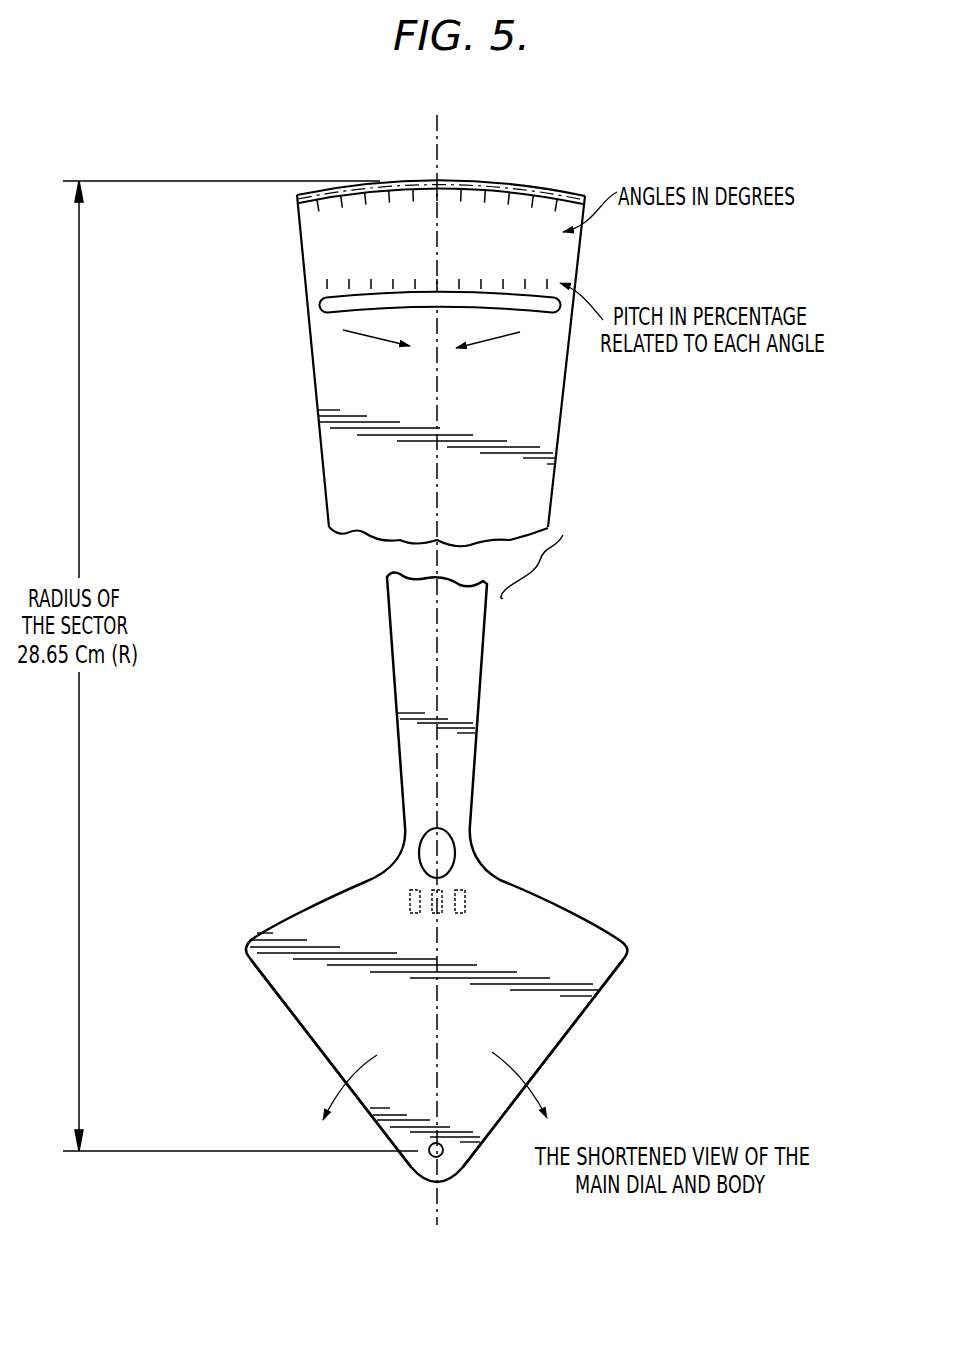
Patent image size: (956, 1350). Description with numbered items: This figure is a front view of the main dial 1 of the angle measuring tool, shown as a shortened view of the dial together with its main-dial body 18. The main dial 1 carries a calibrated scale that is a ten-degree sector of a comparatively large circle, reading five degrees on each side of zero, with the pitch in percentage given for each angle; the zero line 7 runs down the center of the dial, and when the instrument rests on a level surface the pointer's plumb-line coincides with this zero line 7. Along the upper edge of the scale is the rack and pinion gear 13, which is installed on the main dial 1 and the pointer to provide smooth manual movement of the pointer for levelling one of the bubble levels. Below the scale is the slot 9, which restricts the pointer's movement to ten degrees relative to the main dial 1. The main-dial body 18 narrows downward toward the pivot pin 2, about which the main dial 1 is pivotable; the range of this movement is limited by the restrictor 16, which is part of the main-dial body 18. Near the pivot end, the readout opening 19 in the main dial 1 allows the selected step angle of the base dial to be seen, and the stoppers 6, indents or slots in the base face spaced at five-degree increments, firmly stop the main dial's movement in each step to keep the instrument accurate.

The main dial 1 is at (297, 248).
The pivot pin 2 is at (433, 1160).
The stoppers 6 is at (407, 903).
The zero line 7 is at (438, 658).
The slot 9 is at (318, 310).
The rack and pinion gear 13 is at (565, 186).
The restrictor 16 is at (258, 980).
The main-dial body 18 is at (558, 493).
The readout opening 19 is at (458, 862).